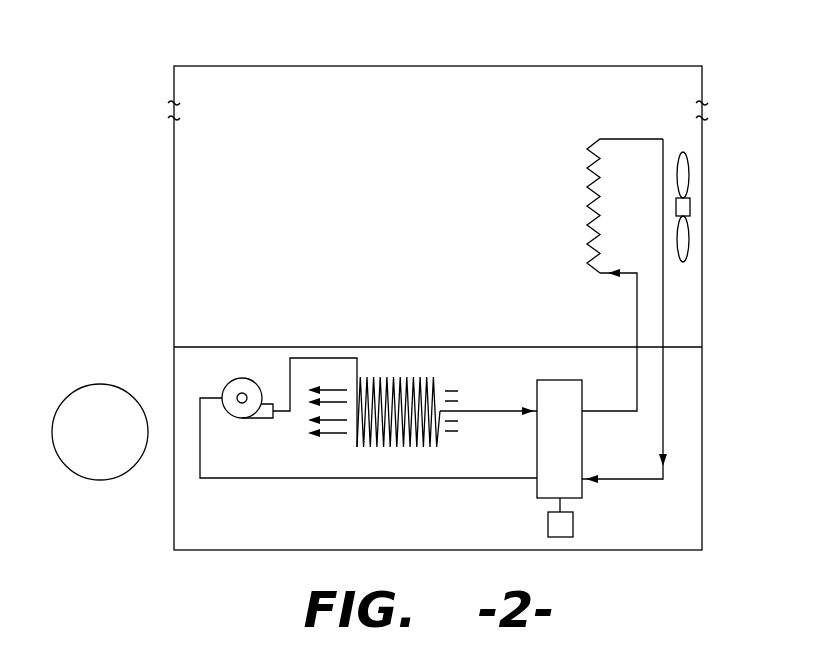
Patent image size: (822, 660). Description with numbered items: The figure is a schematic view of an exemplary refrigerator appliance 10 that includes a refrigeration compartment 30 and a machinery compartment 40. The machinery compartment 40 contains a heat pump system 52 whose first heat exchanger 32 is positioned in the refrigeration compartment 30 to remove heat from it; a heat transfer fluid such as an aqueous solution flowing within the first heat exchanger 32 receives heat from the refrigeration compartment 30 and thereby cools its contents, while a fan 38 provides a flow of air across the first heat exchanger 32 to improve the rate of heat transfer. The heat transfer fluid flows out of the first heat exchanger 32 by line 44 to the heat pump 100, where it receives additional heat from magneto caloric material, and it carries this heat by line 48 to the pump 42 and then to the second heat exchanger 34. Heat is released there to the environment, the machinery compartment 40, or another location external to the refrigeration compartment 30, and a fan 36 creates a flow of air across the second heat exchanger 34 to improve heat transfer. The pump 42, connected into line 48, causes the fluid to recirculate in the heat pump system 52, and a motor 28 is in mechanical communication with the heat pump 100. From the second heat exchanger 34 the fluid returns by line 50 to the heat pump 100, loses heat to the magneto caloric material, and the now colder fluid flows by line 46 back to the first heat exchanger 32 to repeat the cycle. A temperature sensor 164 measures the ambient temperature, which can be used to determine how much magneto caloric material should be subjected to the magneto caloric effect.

The refrigerator appliance 10 is at (108, 152).
The motor 28 is at (548, 522).
The refrigeration compartment 30 is at (434, 92).
The first heat exchanger 32 is at (590, 178).
The second heat exchanger 34 is at (412, 378).
The fan 36 is at (340, 395).
The fan 38 is at (690, 180).
The machinery compartment 40 is at (195, 373).
The pump 42 is at (245, 378).
The line 44 is at (663, 318).
The line 46 is at (637, 322).
The line 48 is at (303, 358).
The line 50 is at (480, 411).
The heat pump system 52 is at (370, 322).
The heat pump 100 is at (566, 380).
The temperature sensor 164 is at (76, 463).